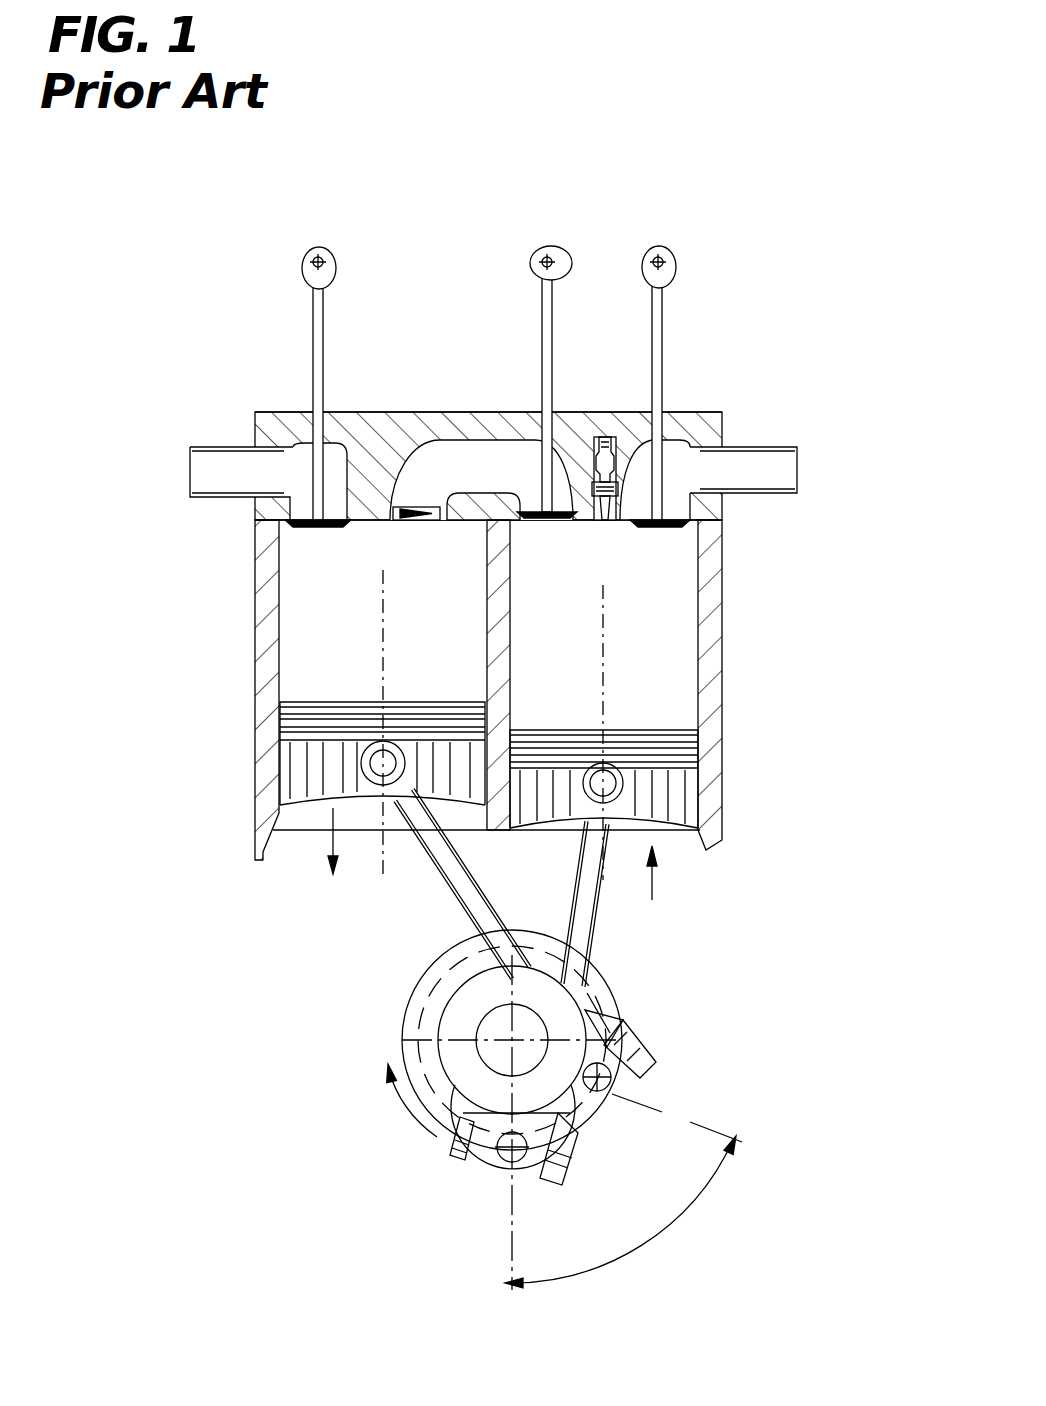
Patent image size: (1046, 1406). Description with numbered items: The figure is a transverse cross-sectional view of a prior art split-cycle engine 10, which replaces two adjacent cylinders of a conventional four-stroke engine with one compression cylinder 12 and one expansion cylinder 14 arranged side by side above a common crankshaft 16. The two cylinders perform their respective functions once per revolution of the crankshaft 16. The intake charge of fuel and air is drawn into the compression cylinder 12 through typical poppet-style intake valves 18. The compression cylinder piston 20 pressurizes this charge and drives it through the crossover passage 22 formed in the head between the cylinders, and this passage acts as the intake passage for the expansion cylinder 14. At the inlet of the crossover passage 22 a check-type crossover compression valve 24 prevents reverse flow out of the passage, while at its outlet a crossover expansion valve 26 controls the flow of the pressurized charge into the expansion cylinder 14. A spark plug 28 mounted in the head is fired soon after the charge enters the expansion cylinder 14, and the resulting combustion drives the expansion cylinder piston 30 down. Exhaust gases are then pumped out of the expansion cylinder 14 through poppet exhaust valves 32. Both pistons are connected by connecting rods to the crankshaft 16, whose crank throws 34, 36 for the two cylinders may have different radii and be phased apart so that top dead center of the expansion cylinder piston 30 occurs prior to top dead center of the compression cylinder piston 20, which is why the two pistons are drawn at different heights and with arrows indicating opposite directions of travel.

The split-cycle engine 10 is at (775, 333).
The compression cylinder 12 is at (288, 633).
The expansion cylinder 14 is at (697, 568).
The crankshaft 16 is at (493, 1023).
The intake valves 18 is at (313, 319).
The compression cylinder piston 20 is at (303, 800).
The crossover passage 22 is at (487, 440).
The crossover compression valve 24 is at (420, 505).
The crossover expansion valve 26 is at (553, 353).
The spark plug 28 is at (600, 487).
The expansion cylinder piston 30 is at (693, 830).
The exhaust valves 32 is at (667, 333).
The crank throw 34 is at (593, 1080).
The crank throw 36 is at (503, 1143).